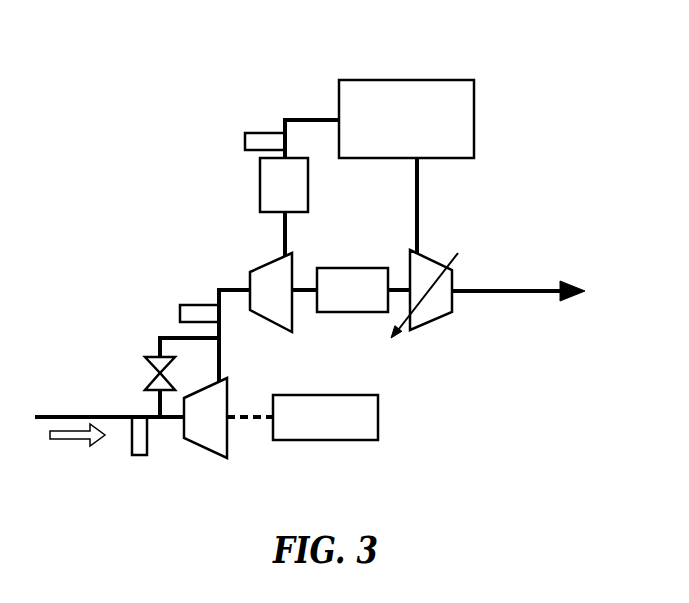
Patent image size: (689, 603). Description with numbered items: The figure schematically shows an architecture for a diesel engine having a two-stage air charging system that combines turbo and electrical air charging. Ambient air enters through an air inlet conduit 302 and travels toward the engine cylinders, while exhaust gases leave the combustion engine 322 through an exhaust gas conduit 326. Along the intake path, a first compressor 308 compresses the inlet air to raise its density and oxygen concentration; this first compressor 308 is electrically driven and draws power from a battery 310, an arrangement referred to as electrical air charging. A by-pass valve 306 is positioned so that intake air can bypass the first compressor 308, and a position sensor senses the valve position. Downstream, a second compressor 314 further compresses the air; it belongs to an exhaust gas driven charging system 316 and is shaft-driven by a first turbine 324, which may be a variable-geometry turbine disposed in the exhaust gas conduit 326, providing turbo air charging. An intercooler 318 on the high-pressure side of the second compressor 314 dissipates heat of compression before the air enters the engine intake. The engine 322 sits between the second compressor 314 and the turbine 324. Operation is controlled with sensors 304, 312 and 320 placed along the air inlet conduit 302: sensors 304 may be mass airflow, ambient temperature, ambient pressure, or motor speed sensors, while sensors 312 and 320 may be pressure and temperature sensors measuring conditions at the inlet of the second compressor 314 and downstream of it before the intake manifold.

The air inlet conduit 302 is at (93, 415).
The sensors 304 is at (128, 447).
The by-pass valve 306 is at (150, 355).
The first compressor 308 is at (203, 447).
The battery 310 is at (320, 442).
The sensor 312 is at (195, 305).
The second compressor 314 is at (277, 325).
The exhaust gas driven charging system 316 is at (352, 313).
The intercooler 318 is at (260, 185).
The sensor 320 is at (268, 132).
The engine 322 is at (402, 78).
The first turbine 324 is at (427, 323).
The exhaust gas conduit 326 is at (505, 288).